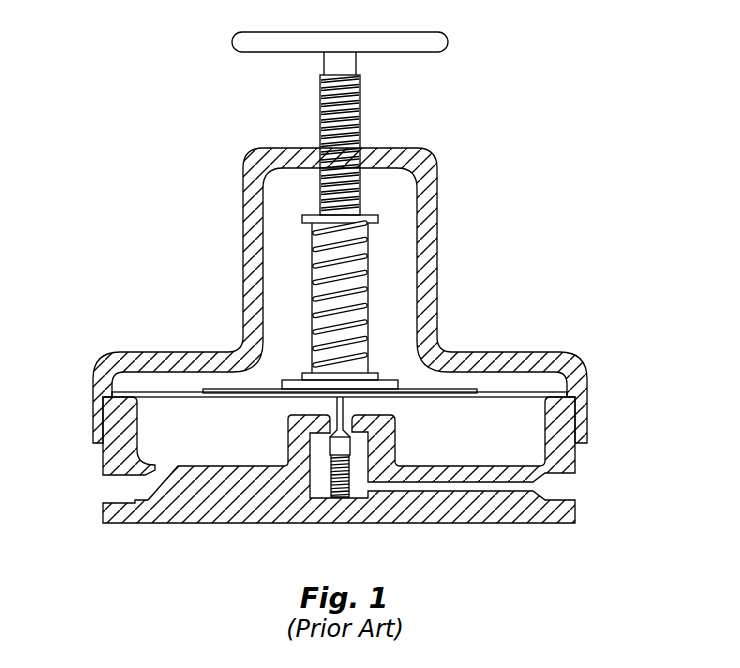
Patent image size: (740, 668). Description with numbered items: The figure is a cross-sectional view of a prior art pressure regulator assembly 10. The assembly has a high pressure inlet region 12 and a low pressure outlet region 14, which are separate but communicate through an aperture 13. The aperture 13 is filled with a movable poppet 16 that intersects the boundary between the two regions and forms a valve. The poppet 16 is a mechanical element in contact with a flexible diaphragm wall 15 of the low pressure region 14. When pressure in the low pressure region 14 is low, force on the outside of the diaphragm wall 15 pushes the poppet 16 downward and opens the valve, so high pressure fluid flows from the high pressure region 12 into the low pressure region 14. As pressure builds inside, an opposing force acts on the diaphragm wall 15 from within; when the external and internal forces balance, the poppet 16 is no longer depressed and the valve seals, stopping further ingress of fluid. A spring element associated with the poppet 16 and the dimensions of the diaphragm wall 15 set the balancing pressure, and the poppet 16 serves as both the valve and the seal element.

The pressure regulator assembly 10 is at (340, 277).
The high pressure inlet region 12 is at (314, 458).
The aperture 13 is at (335, 413).
The low pressure outlet region 14 is at (158, 423).
The flexible diaphragm wall 15 is at (187, 390).
The poppet 16 is at (332, 435).